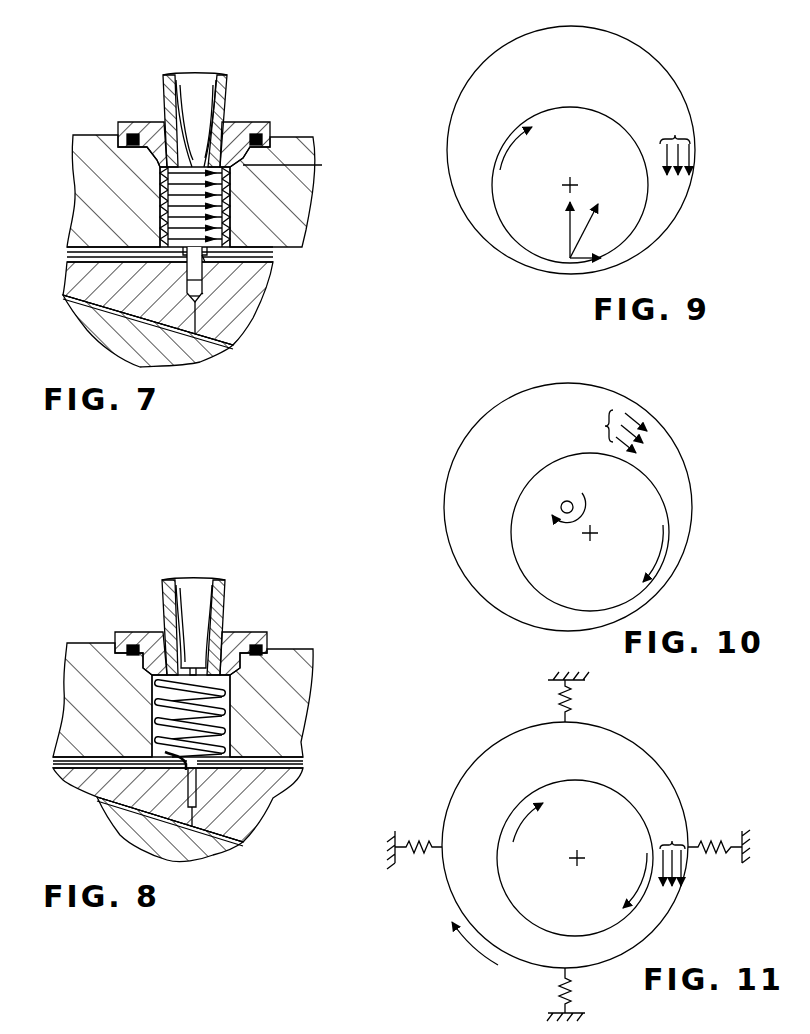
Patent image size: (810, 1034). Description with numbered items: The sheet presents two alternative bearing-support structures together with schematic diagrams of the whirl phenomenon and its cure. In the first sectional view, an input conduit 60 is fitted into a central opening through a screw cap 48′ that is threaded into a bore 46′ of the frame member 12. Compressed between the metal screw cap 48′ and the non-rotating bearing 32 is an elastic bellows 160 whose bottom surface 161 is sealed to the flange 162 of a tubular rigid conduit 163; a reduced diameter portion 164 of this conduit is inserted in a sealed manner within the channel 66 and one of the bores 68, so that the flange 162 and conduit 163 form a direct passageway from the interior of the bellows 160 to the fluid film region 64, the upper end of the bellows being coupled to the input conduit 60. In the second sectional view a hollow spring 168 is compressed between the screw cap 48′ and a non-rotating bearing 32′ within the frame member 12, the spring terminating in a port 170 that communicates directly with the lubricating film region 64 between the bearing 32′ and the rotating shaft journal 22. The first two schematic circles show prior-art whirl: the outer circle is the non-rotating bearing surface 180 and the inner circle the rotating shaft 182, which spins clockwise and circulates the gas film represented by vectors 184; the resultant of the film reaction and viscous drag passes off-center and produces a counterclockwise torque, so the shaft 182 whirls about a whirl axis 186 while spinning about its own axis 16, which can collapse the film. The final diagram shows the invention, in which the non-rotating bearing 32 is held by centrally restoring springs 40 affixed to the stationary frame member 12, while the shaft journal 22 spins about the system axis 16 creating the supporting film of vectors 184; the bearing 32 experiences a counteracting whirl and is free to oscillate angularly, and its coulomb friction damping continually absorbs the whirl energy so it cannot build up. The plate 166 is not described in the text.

In FIG. 7, the frame member 12 is at (82, 203).
In FIG. 8, the frame member 12 is at (289, 649).
In FIG. 11, the frame member 12 is at (552, 682).
In FIG. 9, the system axis 16 is at (573, 183).
In FIG. 10, the system axis 16 is at (594, 530).
In FIG. 11, the system axis 16 is at (582, 855).
In FIG. 7, the rotating shaft journal 22 is at (180, 362).
In FIG. 8, the rotating shaft journal 22 is at (199, 862).
In FIG. 11, the rotating shaft journal 22 is at (543, 783).
In FIG. 7, the non-rotating bearing 32 is at (252, 318).
In FIG. 11, the non-rotating bearing 32 is at (467, 770).
In FIG. 8, the non-rotating bearing 32′ is at (270, 805).
In FIG. 11, the centrally restoring springs 40 is at (568, 704).
In FIG. 7, the bore 46′ is at (284, 169).
In FIG. 7, the screw cap 48′ is at (161, 122).
In FIG. 8, the screw cap 48′ is at (238, 632).
In FIG. 7, the input conduit 60 is at (225, 95).
In FIG. 7, the fluid film region 64 is at (202, 338).
In FIG. 8, the fluid film region 64 is at (249, 843).
In FIG. 7, the channel 66 is at (186, 285).
In FIG. 7, the bores 68 is at (190, 300).
In FIG. 7, the bellows 160 is at (232, 218).
In FIG. 7, the bottom surface 161 is at (219, 256).
In FIG. 7, the flange 162 is at (185, 266).
In FIG. 7, the conduit 163 is at (204, 263).
In FIG. 7, the reduced diameter portion 164 is at (216, 294).
In FIG. 7, the plate 166 is at (66, 258).
In FIG. 8, the hollow spring 168 is at (232, 726).
In FIG. 8, the port 170 is at (200, 790).
In FIG. 9, the non-rotating bearing surface 180 is at (563, 26).
In FIG. 10, the non-rotating bearing surface 180 is at (650, 413).
In FIG. 9, the rotating shaft 182 is at (577, 107).
In FIG. 10, the rotating shaft 182 is at (553, 462).
In FIG. 9, the vectors 184 is at (672, 147).
In FIG. 10, the vectors 184 is at (607, 431).
In FIG. 11, the vectors 184 is at (671, 856).
In FIG. 10, the whirl axis 186 is at (559, 500).